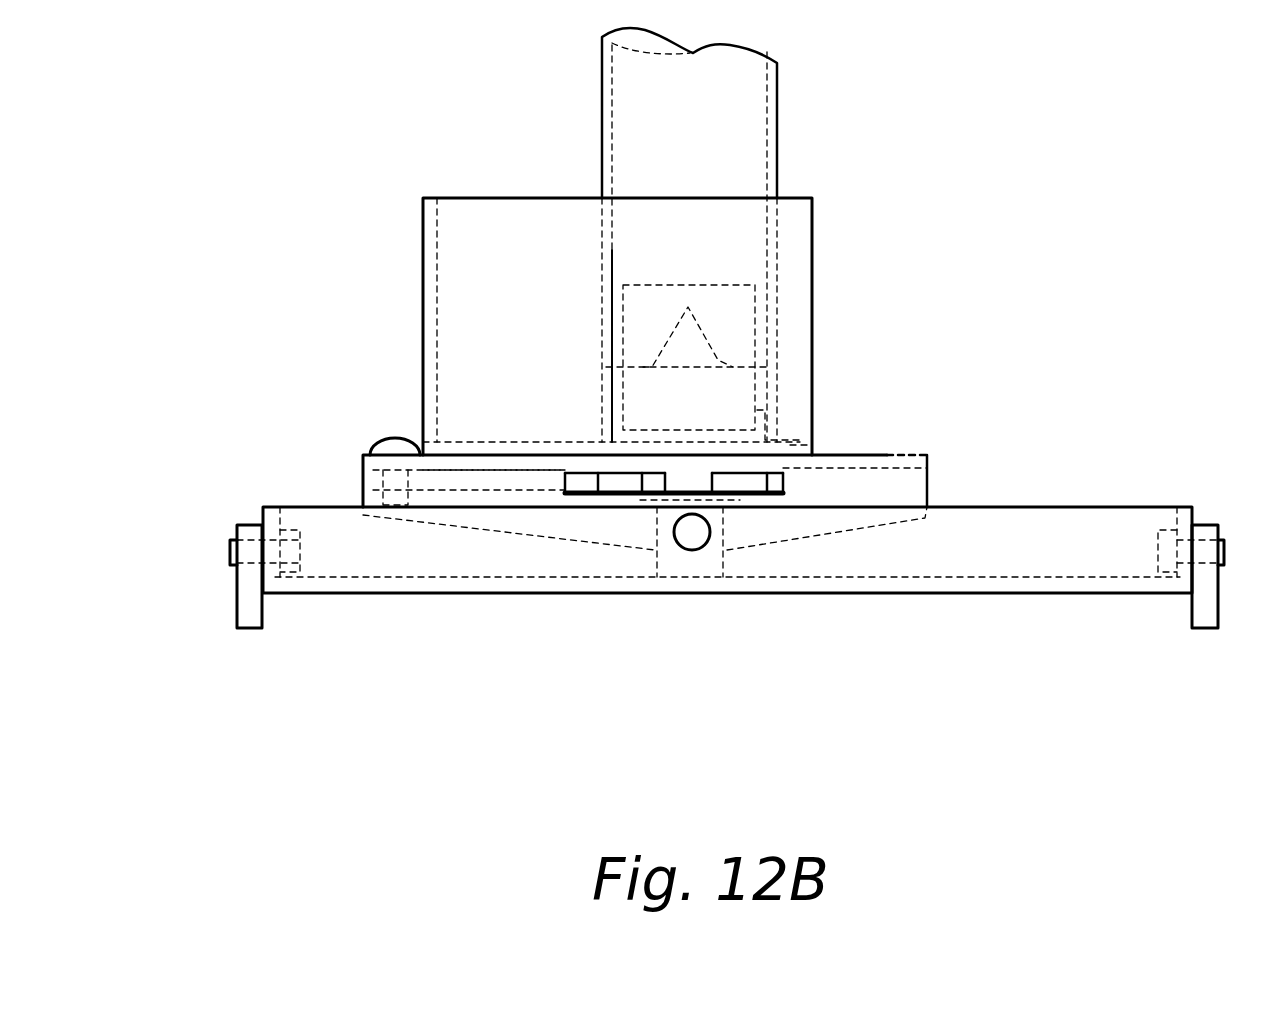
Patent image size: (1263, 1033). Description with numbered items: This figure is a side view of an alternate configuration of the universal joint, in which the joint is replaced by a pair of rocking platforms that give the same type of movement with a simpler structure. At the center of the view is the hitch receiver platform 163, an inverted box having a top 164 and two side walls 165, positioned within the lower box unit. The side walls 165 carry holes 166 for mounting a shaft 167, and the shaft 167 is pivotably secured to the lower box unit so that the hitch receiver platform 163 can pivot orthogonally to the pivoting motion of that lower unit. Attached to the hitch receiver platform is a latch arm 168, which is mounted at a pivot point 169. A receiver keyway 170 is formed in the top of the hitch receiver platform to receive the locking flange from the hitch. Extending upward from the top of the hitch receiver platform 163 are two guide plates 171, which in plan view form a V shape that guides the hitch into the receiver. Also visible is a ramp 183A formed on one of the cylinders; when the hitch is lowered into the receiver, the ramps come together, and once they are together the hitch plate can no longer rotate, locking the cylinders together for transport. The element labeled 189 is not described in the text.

The hitch receiver platform 163 is at (887, 452).
The top 164 is at (773, 437).
The side walls 165 is at (930, 478).
The holes 166 is at (690, 537).
The shaft 167 is at (698, 540).
The latch arm 168 is at (472, 477).
The pivot point 169 is at (383, 437).
The receiver keyway 170 is at (605, 470).
The guide plates 171 is at (823, 208).
The ramp 183A is at (725, 335).
The latch 189 is at (807, 437).